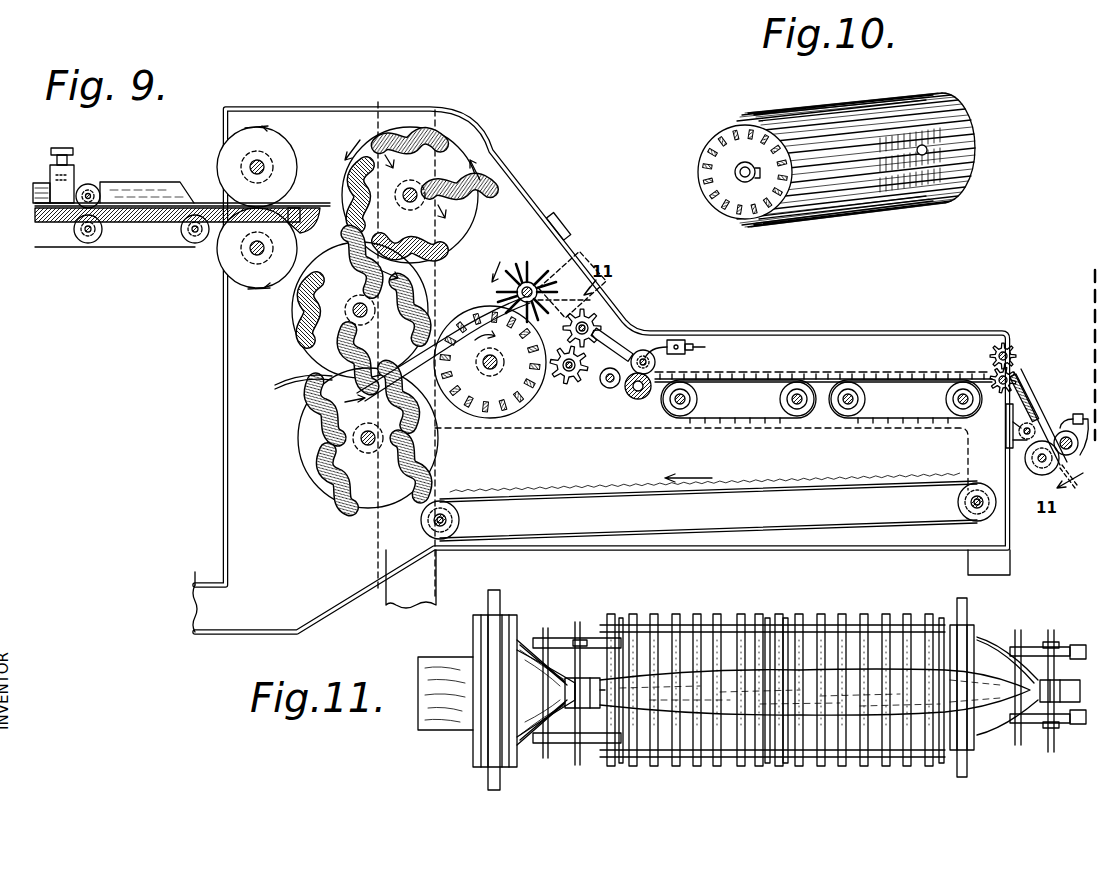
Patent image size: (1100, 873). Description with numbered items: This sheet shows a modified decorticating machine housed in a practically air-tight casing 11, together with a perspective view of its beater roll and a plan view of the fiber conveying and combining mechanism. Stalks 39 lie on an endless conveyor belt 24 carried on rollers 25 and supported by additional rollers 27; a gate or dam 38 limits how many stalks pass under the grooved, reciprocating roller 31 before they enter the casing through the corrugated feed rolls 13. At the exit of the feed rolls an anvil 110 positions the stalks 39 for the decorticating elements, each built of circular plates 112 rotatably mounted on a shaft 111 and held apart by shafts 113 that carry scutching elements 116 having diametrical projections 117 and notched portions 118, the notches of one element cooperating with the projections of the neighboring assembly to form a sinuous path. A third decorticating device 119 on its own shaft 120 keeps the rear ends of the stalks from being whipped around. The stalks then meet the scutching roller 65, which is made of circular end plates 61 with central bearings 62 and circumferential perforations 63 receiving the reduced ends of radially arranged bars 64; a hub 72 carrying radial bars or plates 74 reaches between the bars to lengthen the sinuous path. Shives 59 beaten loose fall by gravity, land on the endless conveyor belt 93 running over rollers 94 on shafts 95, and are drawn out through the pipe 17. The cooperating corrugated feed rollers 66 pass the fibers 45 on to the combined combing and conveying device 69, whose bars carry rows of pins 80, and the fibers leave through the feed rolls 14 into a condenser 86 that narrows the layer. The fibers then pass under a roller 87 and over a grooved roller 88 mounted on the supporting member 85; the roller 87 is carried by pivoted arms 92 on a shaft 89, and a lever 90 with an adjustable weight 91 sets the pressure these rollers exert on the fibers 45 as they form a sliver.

In FIG. 9, the casing 11 is at (468, 126).
In FIG. 9, the corrugated feed rolls 13 is at (272, 142).
In FIG. 9, the feed rolls 14 is at (1012, 350).
In FIG. 11, the feed rolls 14 is at (965, 628).
In FIG. 9, the pipe 17 is at (200, 578).
In FIG. 9, the endless conveyor belt 24 is at (160, 248).
In FIG. 9, the rollers 25 is at (196, 243).
In FIG. 9, the rollers 27 is at (90, 243).
In FIG. 9, the roller 31 is at (100, 190).
In FIG. 9, the gate or dam 38 is at (74, 171).
In FIG. 9, the stalks 39 is at (35, 207).
In FIG. 11, the stalks 39 is at (442, 725).
In FIG. 9, the fibers 45 is at (782, 376).
In FIG. 9, the shives 59 is at (356, 314).
In FIG. 10, the circular end plates 61 is at (970, 148).
In FIG. 10, the bearings 62 is at (738, 180).
In FIG. 10, the perforations 63 is at (712, 153).
In FIG. 9, the bars 64 is at (528, 398).
In FIG. 10, the bars 64 is at (828, 125).
In FIG. 9, the scutching roller 65 is at (495, 376).
In FIG. 10, the scutching roller 65 is at (839, 157).
In FIG. 9, the corrugated feed rollers 66 is at (600, 329).
In FIG. 11, the corrugated feed rollers 66 is at (475, 750).
In FIG. 9, the combined combing and conveying device 69 is at (759, 410).
In FIG. 9, the hub 72 is at (556, 300).
In FIG. 9, the bars or plates 74 is at (520, 270).
In FIG. 9, the pins 80 is at (745, 376).
In FIG. 9, the supporting member 85 is at (1017, 445).
In FIG. 9, the condenser 86 is at (1030, 390).
In FIG. 11, the condenser 86 is at (1010, 648).
In FIG. 9, the roller 87 is at (1072, 488).
In FIG. 11, the roller 87 is at (578, 680).
In FIG. 9, the grooved roller 88 is at (1040, 476).
In FIG. 11, the grooved roller 88 is at (575, 712).
In FIG. 9, the shaft 89 is at (608, 387).
In FIG. 11, the shaft 89 is at (1023, 636).
In FIG. 9, the lever 90 is at (705, 347).
In FIG. 11, the lever 90 is at (1051, 630).
In FIG. 9, the adjustable weight 91 is at (680, 352).
In FIG. 11, the adjustable weight 91 is at (1072, 645).
In FIG. 9, the pivoted arms 92 is at (637, 398).
In FIG. 11, the pivoted arms 92 is at (1040, 647).
In FIG. 9, the endless conveyor belt 93 is at (695, 493).
In FIG. 9, the rollers 94 is at (461, 518).
In FIG. 9, the shafts 95 is at (436, 526).
In FIG. 9, the anvil 110 is at (310, 228).
In FIG. 9, the shaft 111 is at (410, 203).
In FIG. 9, the circular plates 112 is at (413, 173).
In FIG. 9, the shafts 113 is at (415, 125).
In FIG. 9, the scutching elements 116 is at (396, 128).
In FIG. 9, the projections 117 is at (348, 186).
In FIG. 9, the notched portions 118 is at (296, 313).
In FIG. 9, the third decorticating device 119 is at (312, 468).
In FIG. 9, the shaft 120 is at (368, 447).